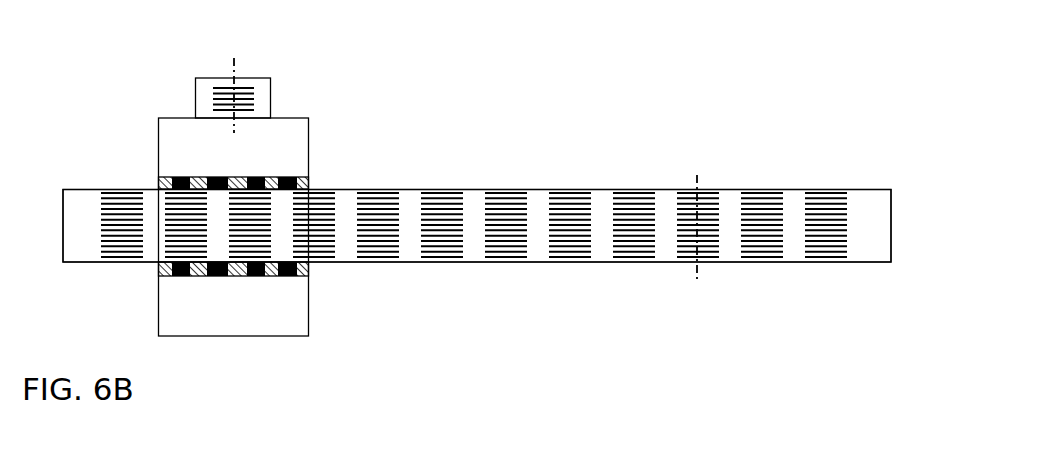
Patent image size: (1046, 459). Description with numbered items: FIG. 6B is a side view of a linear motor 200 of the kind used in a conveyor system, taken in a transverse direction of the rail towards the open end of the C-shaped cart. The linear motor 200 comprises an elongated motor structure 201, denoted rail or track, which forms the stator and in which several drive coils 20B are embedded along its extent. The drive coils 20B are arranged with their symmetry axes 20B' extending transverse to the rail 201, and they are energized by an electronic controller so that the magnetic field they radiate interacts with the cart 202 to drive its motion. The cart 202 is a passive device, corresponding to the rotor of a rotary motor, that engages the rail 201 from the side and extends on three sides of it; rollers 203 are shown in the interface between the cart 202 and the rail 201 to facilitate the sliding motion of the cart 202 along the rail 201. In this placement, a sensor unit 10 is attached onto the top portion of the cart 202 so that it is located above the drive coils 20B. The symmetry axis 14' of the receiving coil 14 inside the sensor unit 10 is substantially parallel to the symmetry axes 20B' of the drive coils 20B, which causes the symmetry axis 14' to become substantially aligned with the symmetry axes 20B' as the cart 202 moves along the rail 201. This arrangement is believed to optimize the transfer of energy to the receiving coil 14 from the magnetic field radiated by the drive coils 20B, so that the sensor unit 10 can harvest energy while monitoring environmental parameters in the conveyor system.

The sensor unit 10 is at (272, 88).
The receiving coil 14 is at (177, 94).
The symmetry axis of the receiving coil 14' is at (270, 72).
The linear motor 200 is at (796, 99).
The elongated motor structure 201 is at (602, 189).
The cart 202 is at (310, 143).
The rollers 203 is at (258, 276).
The drive coils 20B is at (474, 279).
The symmetry axes of the drive coils 20B' is at (747, 218).